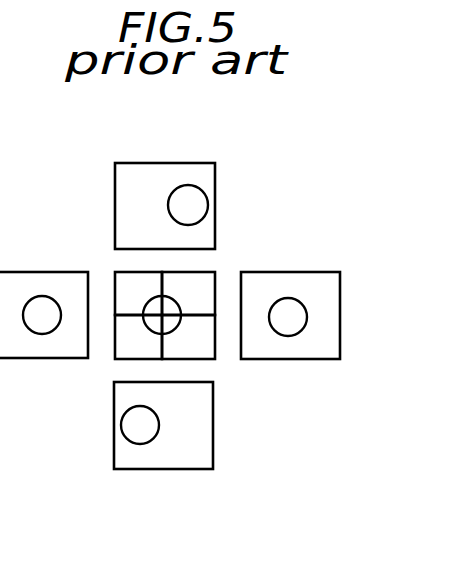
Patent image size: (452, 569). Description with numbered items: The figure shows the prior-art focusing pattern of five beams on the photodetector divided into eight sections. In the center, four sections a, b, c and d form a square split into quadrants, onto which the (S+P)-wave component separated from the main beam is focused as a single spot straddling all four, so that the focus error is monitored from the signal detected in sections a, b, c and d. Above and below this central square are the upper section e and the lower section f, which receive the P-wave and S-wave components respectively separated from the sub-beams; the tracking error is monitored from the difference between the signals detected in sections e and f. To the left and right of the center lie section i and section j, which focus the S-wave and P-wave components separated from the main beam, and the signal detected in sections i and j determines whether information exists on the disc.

The center section a is at (138, 291).
The center section b is at (188, 291).
The center section c is at (138, 338).
The center section d is at (188, 338).
The upper section e is at (165, 206).
The lower section f is at (163, 425).
The left section i is at (44, 314).
The right section j is at (290, 315).